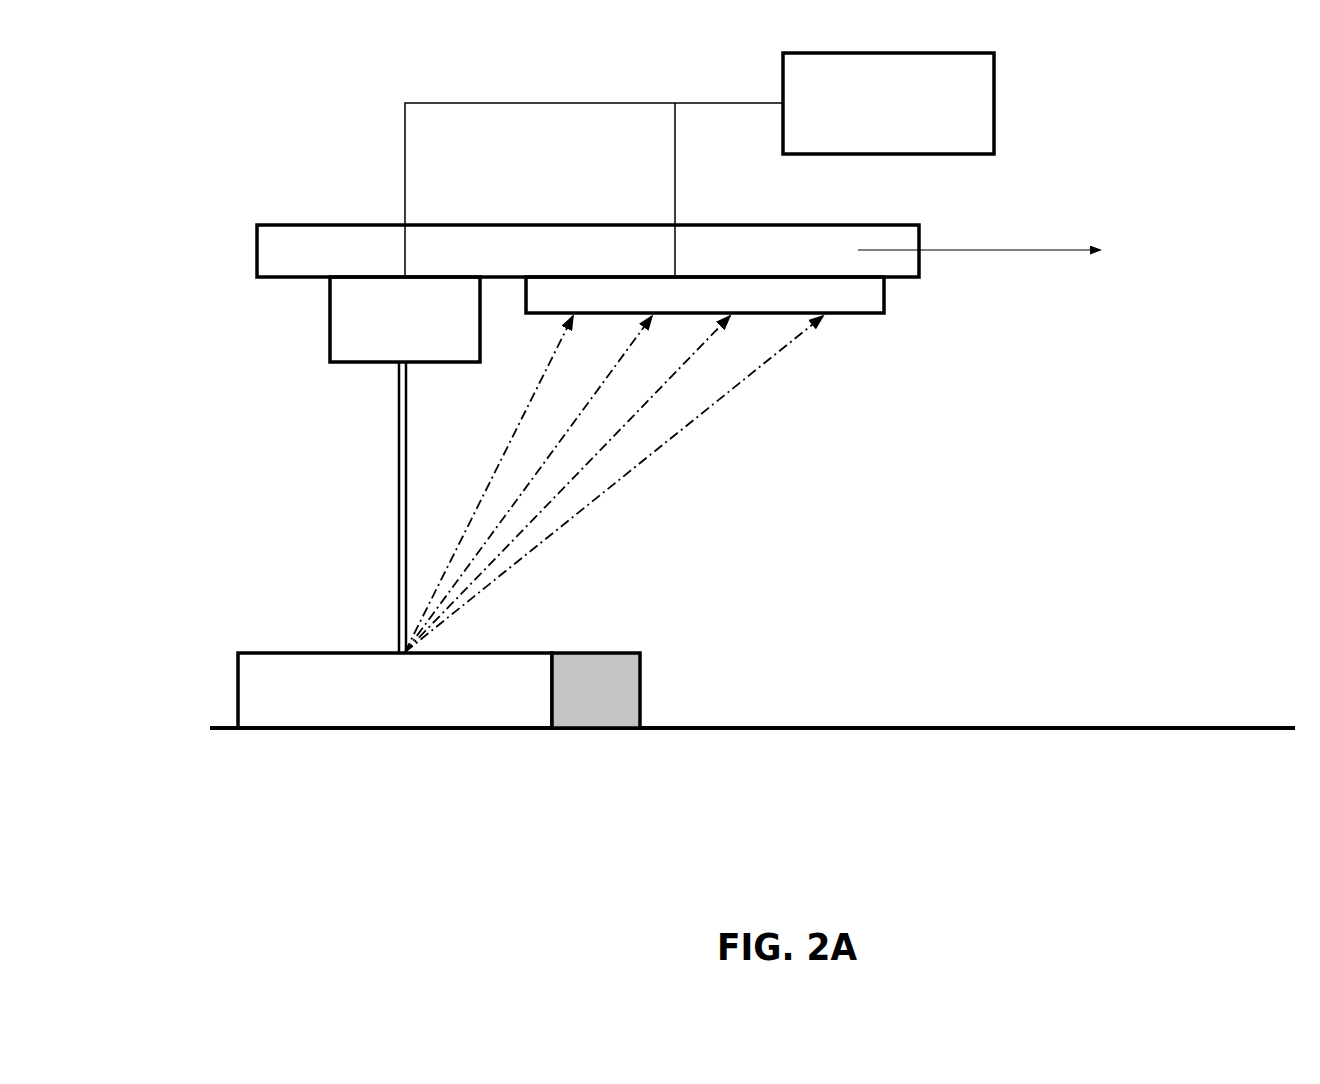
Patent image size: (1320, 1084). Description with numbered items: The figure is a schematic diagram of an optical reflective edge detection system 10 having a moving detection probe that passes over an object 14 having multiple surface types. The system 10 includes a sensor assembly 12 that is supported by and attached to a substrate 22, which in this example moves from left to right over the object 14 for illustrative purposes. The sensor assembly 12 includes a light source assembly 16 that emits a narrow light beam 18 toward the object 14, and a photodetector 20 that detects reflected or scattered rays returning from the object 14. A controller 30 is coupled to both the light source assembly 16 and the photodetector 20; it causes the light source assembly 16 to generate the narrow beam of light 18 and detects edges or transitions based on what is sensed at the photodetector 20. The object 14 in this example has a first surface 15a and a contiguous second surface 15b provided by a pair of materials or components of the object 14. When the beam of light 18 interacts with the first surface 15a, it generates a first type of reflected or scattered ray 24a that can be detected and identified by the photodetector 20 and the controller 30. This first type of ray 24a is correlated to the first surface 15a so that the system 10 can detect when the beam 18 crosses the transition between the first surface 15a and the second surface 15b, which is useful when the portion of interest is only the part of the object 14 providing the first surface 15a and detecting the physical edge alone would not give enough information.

The optical reflective edge detection system 10 is at (222, 190).
The sensor assembly 12 is at (462, 408).
The object 14 is at (217, 688).
The first surface 15a is at (263, 652).
The second surface 15b is at (593, 652).
The light source assembly 16 is at (356, 310).
The narrow light beam 18 is at (395, 545).
The photodetector 20 is at (850, 298).
The substrate 22 is at (868, 234).
The first type of reflected or scattered ray 24a is at (640, 458).
The controller 30 is at (783, 80).